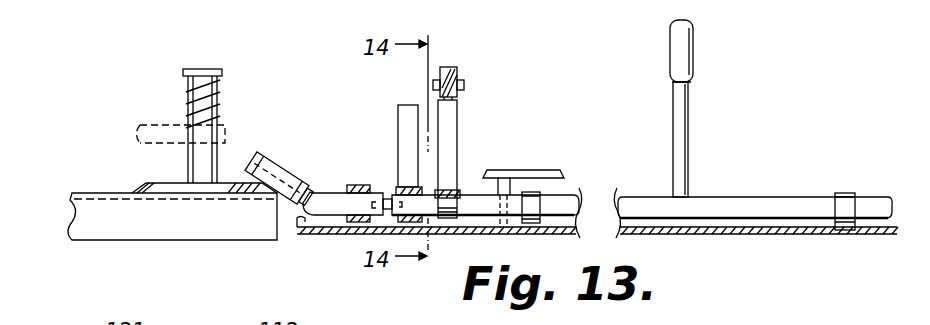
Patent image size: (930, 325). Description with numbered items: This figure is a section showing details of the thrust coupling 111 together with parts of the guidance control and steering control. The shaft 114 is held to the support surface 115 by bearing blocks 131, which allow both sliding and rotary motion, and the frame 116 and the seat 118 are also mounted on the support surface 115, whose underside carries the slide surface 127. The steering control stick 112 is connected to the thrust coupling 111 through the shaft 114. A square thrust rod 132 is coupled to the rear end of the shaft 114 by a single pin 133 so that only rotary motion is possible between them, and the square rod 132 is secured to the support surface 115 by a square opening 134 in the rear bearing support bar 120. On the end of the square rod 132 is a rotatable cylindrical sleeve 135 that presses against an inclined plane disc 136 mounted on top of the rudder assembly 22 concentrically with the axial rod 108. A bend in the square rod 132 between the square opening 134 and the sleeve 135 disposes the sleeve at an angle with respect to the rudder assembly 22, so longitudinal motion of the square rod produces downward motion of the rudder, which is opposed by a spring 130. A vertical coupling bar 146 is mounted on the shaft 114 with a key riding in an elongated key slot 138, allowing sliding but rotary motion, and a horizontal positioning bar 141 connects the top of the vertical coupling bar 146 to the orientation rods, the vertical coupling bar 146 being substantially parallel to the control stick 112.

The rudder assembly 22 is at (90, 263).
The axial rod 108 is at (185, 70).
The thrust coupling 111 is at (242, 99).
The steering control stick 112 is at (693, 72).
The shaft 114 is at (620, 197).
The support surface 115 is at (585, 235).
The frame 116 is at (406, 105).
The seat 118 is at (535, 172).
The bearing support bar 120 is at (356, 186).
The slide surface 127 is at (720, 234).
The spring 130 is at (192, 98).
The bearing blocks 131 is at (540, 193).
The square thrust rod 132 is at (300, 212).
The pin 133 is at (388, 198).
The square opening 134 is at (343, 190).
The rotatable cylindrical sleeve 135 is at (275, 143).
The inclined plane disc 136 is at (140, 185).
The elongated key slot 138 is at (468, 195).
The horizontal positioning bar 141 is at (447, 67).
The vertical coupling bar 146 is at (458, 128).